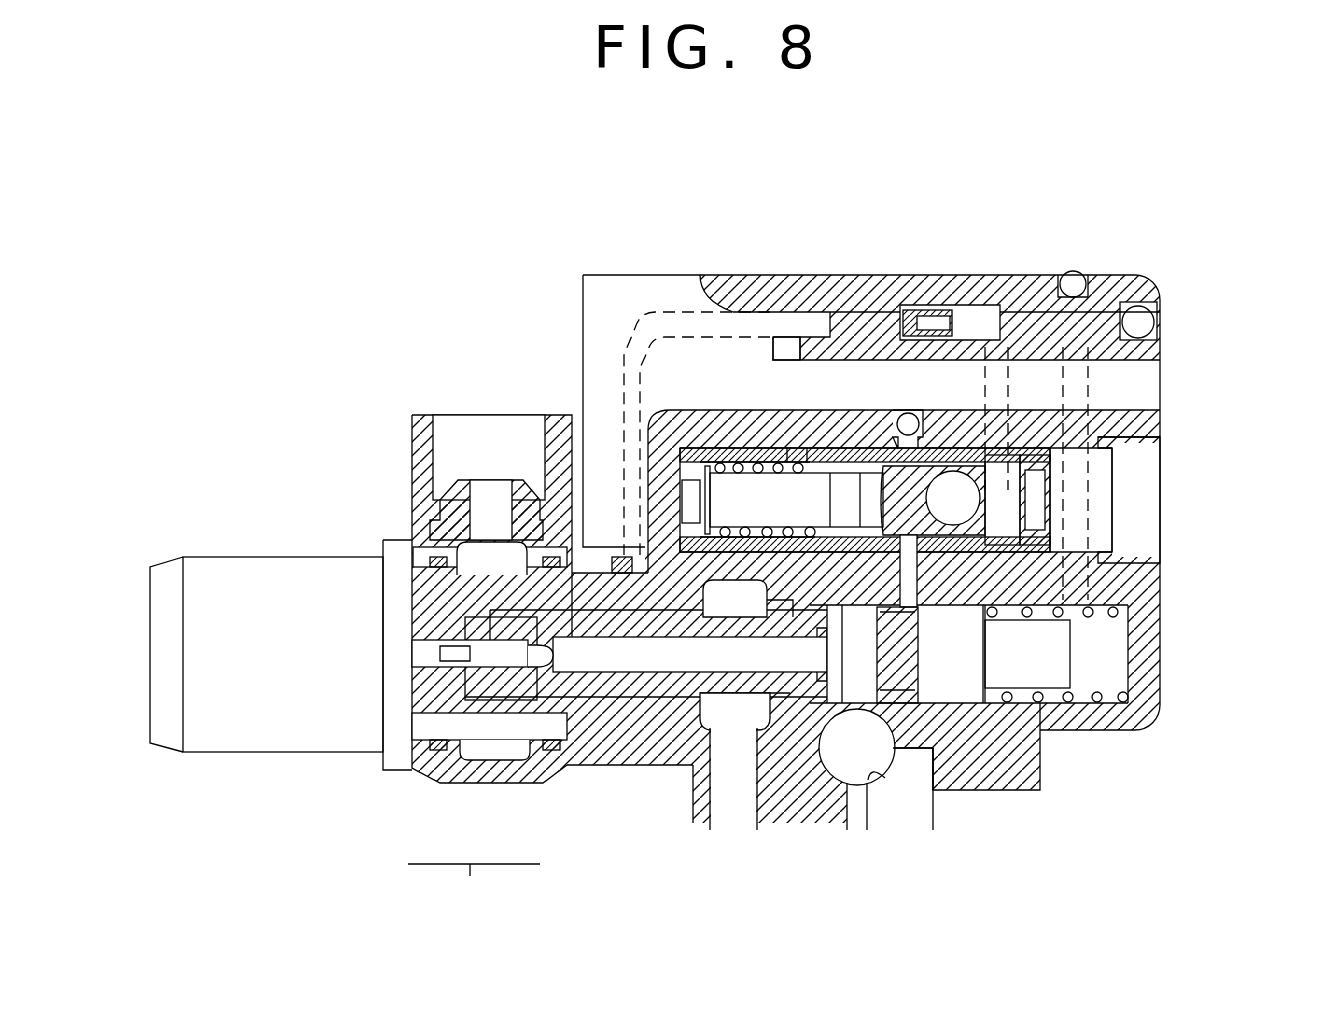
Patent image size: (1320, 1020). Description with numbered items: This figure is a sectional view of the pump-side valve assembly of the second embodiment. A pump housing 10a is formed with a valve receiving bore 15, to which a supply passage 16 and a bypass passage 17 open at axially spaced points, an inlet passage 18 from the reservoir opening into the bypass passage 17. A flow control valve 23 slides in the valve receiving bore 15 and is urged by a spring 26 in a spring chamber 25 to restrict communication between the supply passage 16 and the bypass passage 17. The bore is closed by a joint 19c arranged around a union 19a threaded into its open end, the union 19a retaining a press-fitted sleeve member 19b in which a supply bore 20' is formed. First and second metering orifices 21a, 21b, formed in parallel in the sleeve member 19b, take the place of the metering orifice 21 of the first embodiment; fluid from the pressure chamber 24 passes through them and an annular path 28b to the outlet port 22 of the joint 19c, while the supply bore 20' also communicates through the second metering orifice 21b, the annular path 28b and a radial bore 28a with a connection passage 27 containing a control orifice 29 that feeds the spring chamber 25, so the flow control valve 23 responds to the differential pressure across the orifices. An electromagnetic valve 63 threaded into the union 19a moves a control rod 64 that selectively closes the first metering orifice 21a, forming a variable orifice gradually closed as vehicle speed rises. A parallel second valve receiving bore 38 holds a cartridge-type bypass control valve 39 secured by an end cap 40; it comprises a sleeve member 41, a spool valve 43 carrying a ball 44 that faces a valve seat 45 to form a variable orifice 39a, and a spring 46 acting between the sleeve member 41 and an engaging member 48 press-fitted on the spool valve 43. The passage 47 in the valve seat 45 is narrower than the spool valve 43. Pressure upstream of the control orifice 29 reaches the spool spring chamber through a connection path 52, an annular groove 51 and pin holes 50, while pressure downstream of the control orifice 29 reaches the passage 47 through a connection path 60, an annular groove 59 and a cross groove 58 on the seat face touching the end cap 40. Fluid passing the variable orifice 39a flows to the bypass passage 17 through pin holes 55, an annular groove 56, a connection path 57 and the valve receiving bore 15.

The pump housing 10a is at (1168, 395).
The valve receiving bore 15 is at (1113, 675).
The supply passage 16 is at (742, 800).
The bypass passage 17 is at (913, 800).
The inlet passage 18 is at (863, 790).
The union 19a is at (607, 713).
The sleeve member 19b is at (692, 740).
The joint 19c is at (412, 453).
The supply bore 20' is at (690, 726).
The metering orifice 21 is at (474, 887).
The first metering orifice 21a is at (490, 745).
The second metering orifice 21b is at (550, 748).
The outlet port 22 is at (478, 425).
The flow control valve 23 is at (960, 685).
The pressure chamber 24 is at (737, 713).
The spring chamber 25 is at (1103, 618).
The spring 26 is at (1067, 685).
The connection passage 27 is at (772, 350).
The radial bore 28a is at (585, 384).
The annular path 28b is at (480, 553).
The control orifice 29 is at (912, 412).
The second valve receiving bore 38 is at (885, 490).
The bypass control valve 39 is at (753, 430).
The variable orifice 39a is at (1052, 500).
The end cap 40 is at (1153, 457).
The sleeve member 41 is at (620, 546).
The spool valve 43 is at (866, 465).
The ball 44 is at (978, 458).
The valve seat 45 is at (1040, 410).
The spring 46 is at (689, 438).
The passage 47 is at (1120, 484).
The engaging member 48 is at (712, 498).
The pin holes 50 is at (748, 599).
The annular groove 51 is at (838, 460).
The connection path 52 is at (822, 445).
The pin holes 55 is at (930, 654).
The annular groove 56 is at (940, 322).
The connection path 57 is at (876, 612).
The cross groove 58 is at (1002, 540).
The annular groove 59 is at (1000, 560).
The connection path 60 is at (1010, 352).
The electromagnetic valve 63 is at (258, 737).
The control rod 64 is at (450, 655).